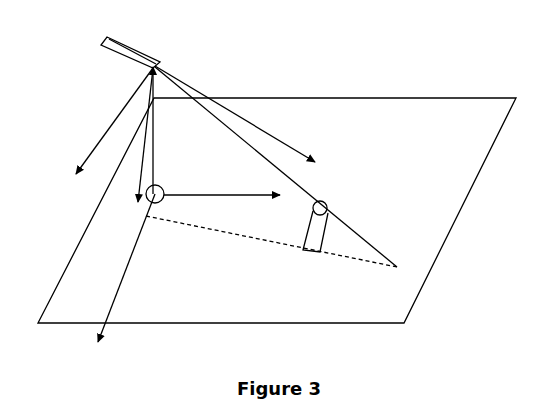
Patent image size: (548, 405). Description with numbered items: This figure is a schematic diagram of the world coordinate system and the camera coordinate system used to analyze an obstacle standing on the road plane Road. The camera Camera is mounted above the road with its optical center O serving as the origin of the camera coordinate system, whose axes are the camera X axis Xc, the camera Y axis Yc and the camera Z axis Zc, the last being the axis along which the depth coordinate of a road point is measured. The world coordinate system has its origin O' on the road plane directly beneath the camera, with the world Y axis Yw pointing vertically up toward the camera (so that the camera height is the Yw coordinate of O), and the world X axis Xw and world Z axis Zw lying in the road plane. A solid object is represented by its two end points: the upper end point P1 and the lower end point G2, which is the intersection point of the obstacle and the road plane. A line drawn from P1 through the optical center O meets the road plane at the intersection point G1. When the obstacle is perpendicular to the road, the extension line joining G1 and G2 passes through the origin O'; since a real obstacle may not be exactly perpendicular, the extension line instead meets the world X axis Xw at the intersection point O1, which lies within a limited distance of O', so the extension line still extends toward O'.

The camera Camera is at (130, 41).
The optical center O is at (164, 56).
The camera coordinate X axis Xc is at (102, 121).
The camera coordinate Y axis Yc is at (137, 135).
The camera coordinate Z axis Zc is at (235, 114).
The world coordinate X axis Xw is at (118, 268).
The world coordinate Y axis Yw is at (165, 130).
The world coordinate Z axis Zw is at (222, 189).
The origin of the world coordinate system O' is at (160, 183).
The intersection point of X axis and extension line O1 is at (268, 241).
The upper end point of solid object P1 is at (327, 200).
The intersection point of road plane and line P1-O G1 is at (288, 174).
The intersection point of obstacle and road plane G2 is at (315, 246).
The road plane Road is at (277, 210).